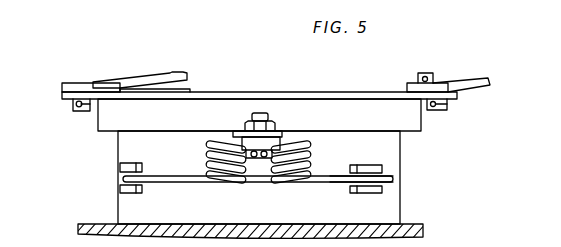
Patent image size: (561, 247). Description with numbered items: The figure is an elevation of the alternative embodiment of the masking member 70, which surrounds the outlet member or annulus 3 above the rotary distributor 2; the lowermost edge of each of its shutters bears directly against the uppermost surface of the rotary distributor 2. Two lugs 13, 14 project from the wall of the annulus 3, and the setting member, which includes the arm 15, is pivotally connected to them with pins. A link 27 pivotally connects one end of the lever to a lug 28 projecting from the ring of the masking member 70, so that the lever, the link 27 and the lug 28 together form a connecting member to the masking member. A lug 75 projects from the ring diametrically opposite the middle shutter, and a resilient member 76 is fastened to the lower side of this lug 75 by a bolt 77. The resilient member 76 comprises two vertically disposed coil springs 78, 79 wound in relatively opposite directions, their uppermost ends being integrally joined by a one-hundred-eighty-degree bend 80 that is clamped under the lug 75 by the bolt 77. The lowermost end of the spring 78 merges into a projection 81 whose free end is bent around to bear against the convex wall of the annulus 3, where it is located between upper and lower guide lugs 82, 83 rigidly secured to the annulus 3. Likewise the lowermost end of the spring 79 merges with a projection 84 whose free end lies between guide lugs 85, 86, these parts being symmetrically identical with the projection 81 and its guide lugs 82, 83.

The rotary distributor 2 is at (423, 230).
The annulus 3 is at (399, 213).
The lug 13 is at (62, 95).
The lug 14 is at (458, 97).
The arm 15 is at (122, 80).
The link 27 is at (466, 82).
The lug 28 is at (384, 92).
The masking member 70 is at (97, 125).
The lug 75 is at (237, 132).
The resilient member 76 is at (271, 181).
The bolt 77 is at (273, 129).
The coil spring 78 is at (297, 180).
The coil spring 79 is at (222, 179).
The bend 80 is at (284, 143).
The projection 81 is at (330, 177).
The upper guide lug 82 is at (382, 168).
The lower guide lug 83 is at (383, 190).
The projection 84 is at (166, 176).
The guide lug 85 is at (120, 168).
The guide lug 86 is at (122, 190).